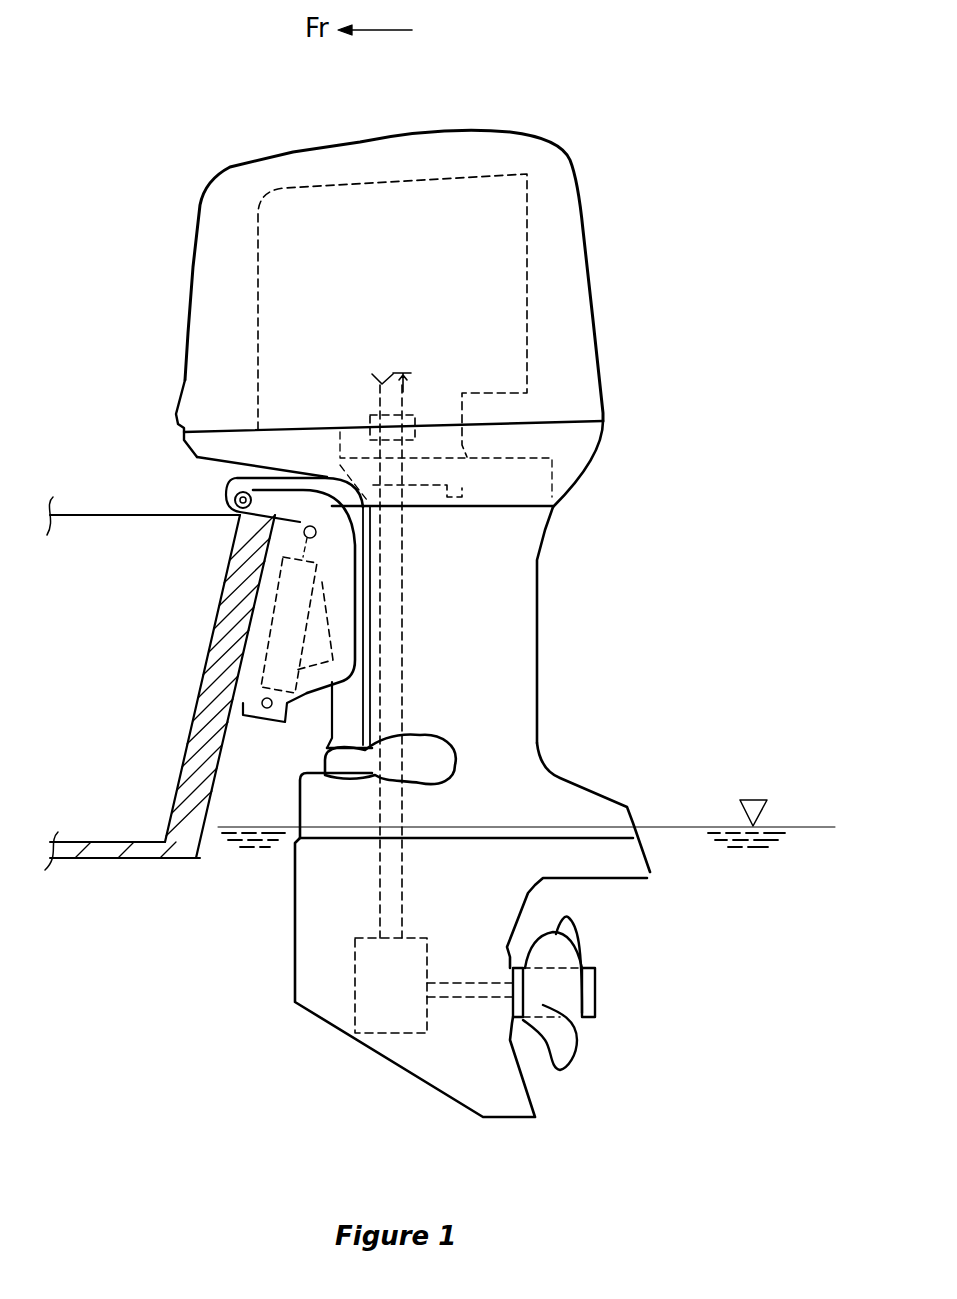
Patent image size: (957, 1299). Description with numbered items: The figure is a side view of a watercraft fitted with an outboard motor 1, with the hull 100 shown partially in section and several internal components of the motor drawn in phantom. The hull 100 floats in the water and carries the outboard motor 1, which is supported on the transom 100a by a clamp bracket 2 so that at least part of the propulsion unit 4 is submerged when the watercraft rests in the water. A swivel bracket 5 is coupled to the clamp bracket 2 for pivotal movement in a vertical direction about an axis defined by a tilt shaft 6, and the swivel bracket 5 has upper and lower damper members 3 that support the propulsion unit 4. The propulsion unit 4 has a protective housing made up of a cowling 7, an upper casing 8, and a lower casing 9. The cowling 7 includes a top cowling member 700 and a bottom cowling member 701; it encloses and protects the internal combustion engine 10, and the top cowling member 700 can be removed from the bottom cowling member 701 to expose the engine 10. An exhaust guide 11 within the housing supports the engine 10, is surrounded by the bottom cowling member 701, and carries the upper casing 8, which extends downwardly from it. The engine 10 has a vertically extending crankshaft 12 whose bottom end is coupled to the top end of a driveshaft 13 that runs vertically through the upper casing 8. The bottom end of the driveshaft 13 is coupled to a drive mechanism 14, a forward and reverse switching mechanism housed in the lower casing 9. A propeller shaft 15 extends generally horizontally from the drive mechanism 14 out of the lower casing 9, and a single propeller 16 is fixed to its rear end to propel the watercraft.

The outboard motor 1 is at (572, 137).
The top cowling member 700 is at (577, 207).
The cowling 7 is at (598, 368).
The bottom cowling member 701 is at (600, 440).
The internal combustion engine 10 is at (527, 285).
The exhaust guide 11 is at (555, 470).
The crankshaft 12 is at (403, 392).
The driveshaft 13 is at (405, 712).
The damper members 3 is at (455, 500).
The propulsion unit 4 is at (538, 618).
The upper casing 8 is at (538, 745).
The lower casing 9 is at (300, 950).
The drive mechanism 14 is at (428, 940).
The propeller shaft 15 is at (467, 1003).
The propeller 16 is at (580, 1062).
The swivel bracket 5 is at (325, 754).
The tilt shaft 6 is at (232, 498).
The clamp bracket 2 is at (303, 692).
The hull 100 is at (123, 860).
The transom 100a is at (200, 735).